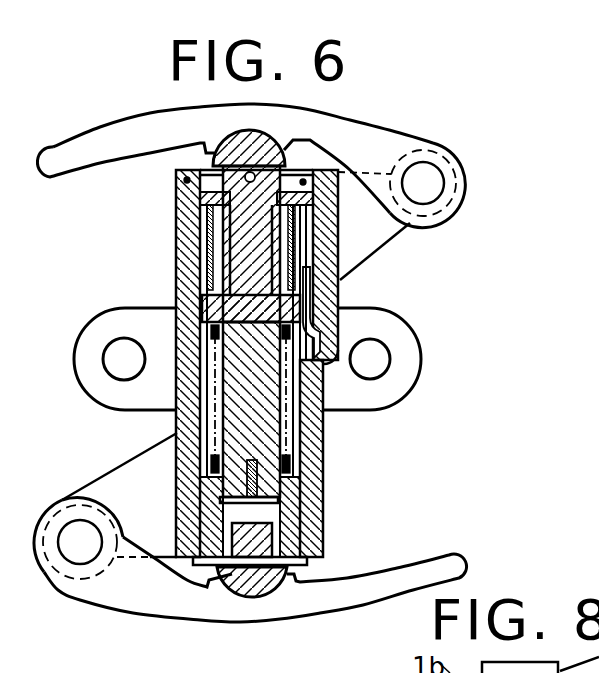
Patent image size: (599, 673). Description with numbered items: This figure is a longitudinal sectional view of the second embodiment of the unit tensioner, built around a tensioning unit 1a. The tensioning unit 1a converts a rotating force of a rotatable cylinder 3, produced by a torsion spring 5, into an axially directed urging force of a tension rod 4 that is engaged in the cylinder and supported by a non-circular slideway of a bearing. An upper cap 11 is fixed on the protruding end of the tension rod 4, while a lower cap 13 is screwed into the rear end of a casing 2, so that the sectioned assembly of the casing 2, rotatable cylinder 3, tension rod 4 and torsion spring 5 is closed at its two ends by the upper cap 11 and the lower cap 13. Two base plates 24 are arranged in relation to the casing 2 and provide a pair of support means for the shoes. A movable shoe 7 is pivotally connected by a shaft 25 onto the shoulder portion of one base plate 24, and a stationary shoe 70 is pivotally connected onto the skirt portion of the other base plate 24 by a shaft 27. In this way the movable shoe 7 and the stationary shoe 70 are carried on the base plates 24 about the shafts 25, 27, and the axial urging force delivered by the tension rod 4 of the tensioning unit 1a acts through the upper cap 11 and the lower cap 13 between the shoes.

The tensioning unit 1a is at (259, 393).
The casing 2 is at (220, 288).
The rotatable cylinder 3 is at (340, 280).
The tension rod 4 is at (220, 231).
The torsion spring 5 is at (288, 461).
The movable shoe 7 is at (92, 132).
The upper cap 11 is at (213, 162).
The lower cap 13 is at (236, 598).
The base plate 24 is at (392, 240).
The shaft 25 is at (424, 184).
The shaft 27 is at (73, 537).
The stationary shoe 70 is at (321, 607).